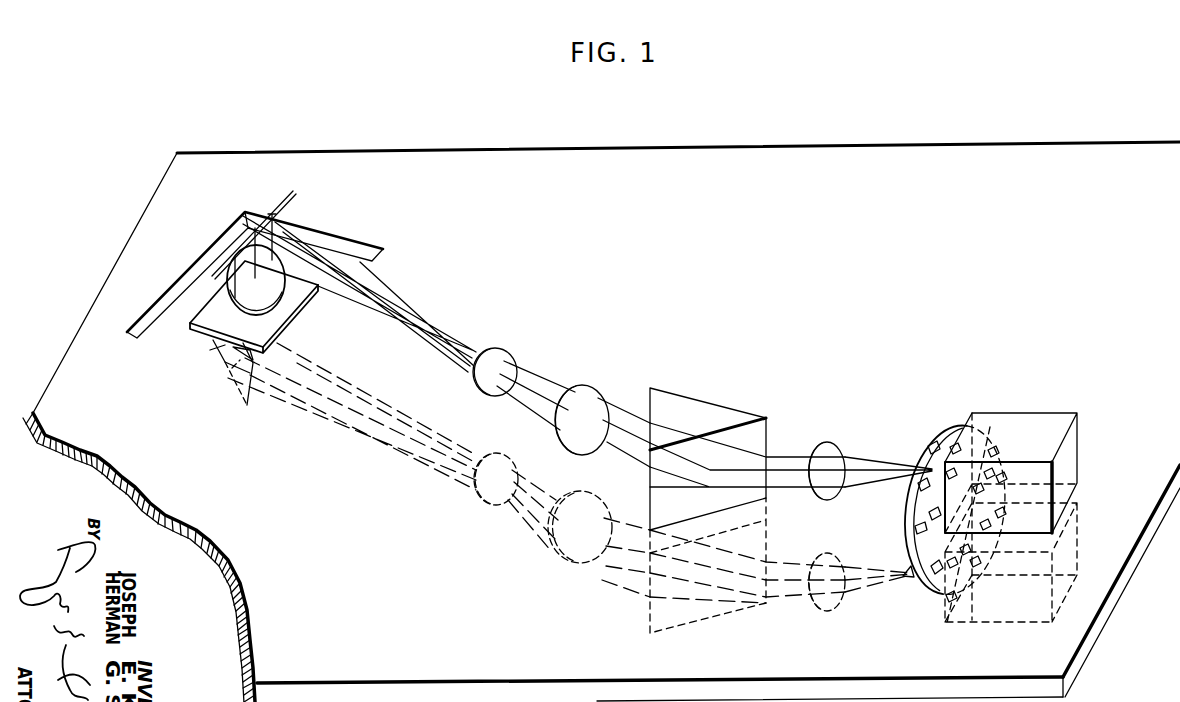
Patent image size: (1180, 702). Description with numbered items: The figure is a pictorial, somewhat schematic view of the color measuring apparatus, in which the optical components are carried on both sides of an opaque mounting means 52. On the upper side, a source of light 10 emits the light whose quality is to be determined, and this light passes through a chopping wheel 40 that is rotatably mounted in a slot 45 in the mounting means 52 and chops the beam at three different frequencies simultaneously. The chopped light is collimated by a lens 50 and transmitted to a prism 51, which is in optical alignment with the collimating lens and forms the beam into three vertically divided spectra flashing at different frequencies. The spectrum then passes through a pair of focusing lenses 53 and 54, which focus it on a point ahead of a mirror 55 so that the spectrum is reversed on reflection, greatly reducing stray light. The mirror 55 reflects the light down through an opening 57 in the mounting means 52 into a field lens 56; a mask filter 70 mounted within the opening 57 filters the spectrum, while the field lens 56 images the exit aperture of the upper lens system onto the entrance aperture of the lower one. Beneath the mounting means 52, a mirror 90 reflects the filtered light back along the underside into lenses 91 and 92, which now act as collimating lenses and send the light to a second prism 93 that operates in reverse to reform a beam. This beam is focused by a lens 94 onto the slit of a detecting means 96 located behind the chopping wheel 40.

The source of light 10 is at (1017, 420).
The chopping wheel 40 is at (923, 448).
The slot 45 is at (909, 568).
The collimating lens 50 is at (827, 443).
The prism 51 is at (693, 412).
The mounting means 52 is at (957, 152).
The focusing lens 53 is at (568, 386).
The focusing lens 54 is at (487, 348).
The mirror 55 is at (293, 192).
The field lens 56 is at (230, 276).
The opening 57 is at (380, 250).
The mask filter 70 is at (200, 330).
The mirror 90 is at (235, 383).
The focusing lens 91 is at (480, 498).
The focusing lens 92 is at (557, 553).
The prism 93 is at (653, 613).
The lens 94 is at (807, 593).
The detecting means 96 is at (1065, 545).